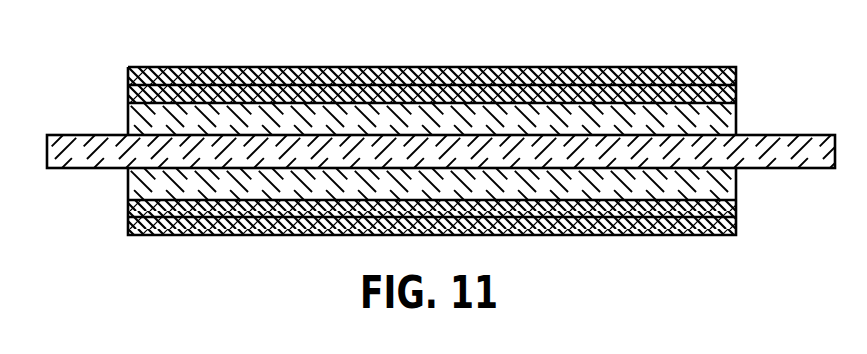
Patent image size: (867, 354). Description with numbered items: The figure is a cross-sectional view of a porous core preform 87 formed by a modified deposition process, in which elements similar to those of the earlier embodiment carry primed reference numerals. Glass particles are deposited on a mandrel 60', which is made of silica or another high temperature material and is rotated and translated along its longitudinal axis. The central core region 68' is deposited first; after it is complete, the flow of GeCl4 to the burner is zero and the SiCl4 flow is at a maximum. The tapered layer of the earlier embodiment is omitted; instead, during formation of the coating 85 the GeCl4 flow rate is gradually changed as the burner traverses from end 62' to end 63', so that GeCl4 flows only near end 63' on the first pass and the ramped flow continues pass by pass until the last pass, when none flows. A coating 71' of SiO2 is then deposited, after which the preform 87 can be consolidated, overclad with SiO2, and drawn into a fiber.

The preform 87 is at (423, 146).
The mandrel 60' is at (423, 127).
The end 62' is at (402, 68).
The end 63' is at (469, 112).
The central core region 68' is at (399, 186).
The coating 85 is at (128, 208).
The coating 71' is at (411, 251).